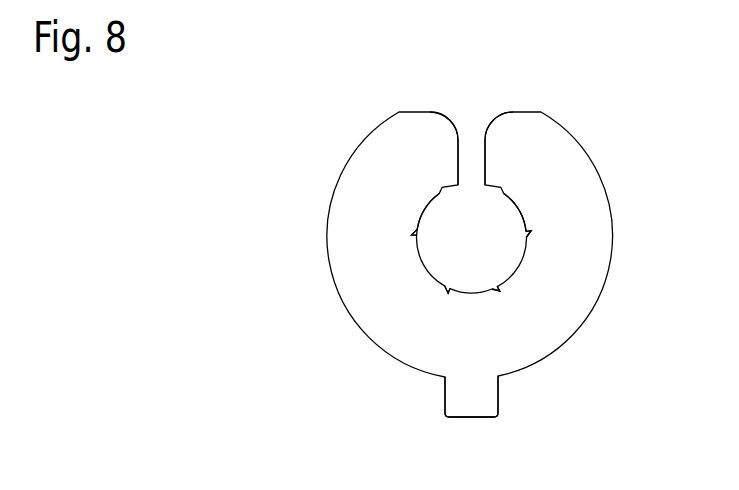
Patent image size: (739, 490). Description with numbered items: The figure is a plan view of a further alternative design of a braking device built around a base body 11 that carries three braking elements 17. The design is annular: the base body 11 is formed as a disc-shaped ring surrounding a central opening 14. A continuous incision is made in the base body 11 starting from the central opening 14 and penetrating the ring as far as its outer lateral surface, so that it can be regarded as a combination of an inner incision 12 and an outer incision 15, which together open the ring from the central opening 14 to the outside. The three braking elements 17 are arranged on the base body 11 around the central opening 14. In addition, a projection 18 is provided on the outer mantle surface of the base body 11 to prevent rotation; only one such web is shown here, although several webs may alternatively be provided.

The base body 11 is at (567, 290).
The inner incision 12 is at (473, 137).
The central opening 14 is at (488, 246).
The outer incision 15 is at (471, 126).
The braking element 17 is at (517, 213).
The projection 18 is at (472, 397).